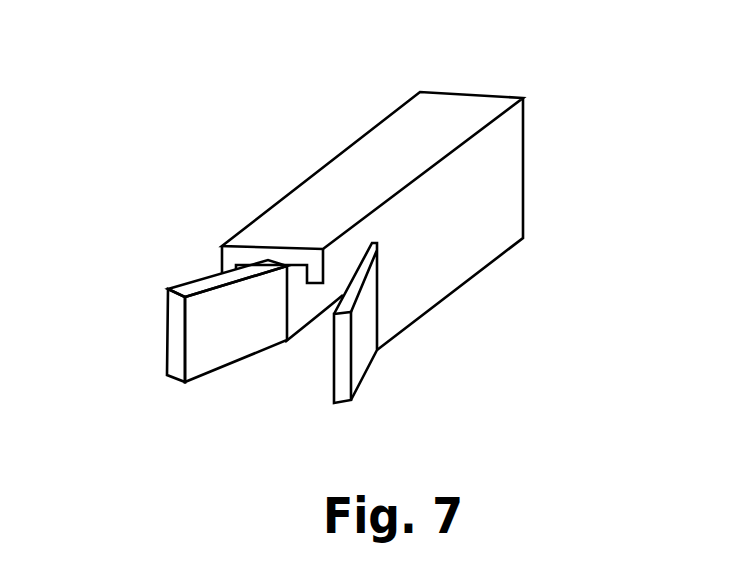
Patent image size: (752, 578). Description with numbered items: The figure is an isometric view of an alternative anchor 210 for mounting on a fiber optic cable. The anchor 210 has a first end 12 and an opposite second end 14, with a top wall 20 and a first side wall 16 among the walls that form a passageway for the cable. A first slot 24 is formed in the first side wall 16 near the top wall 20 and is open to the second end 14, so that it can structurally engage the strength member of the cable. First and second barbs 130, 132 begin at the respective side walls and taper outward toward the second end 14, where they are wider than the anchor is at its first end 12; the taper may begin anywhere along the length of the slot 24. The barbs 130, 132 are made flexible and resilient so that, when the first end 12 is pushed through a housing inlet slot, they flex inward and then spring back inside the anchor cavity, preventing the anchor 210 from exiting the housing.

The anchor 210 is at (347, 125).
The first end 12 is at (525, 172).
The top wall 20 is at (447, 108).
The first side wall 16 is at (467, 250).
The second end 14 is at (218, 257).
The second barb 132 is at (167, 327).
The first barb 130 is at (352, 352).
The first slot 24 is at (374, 252).